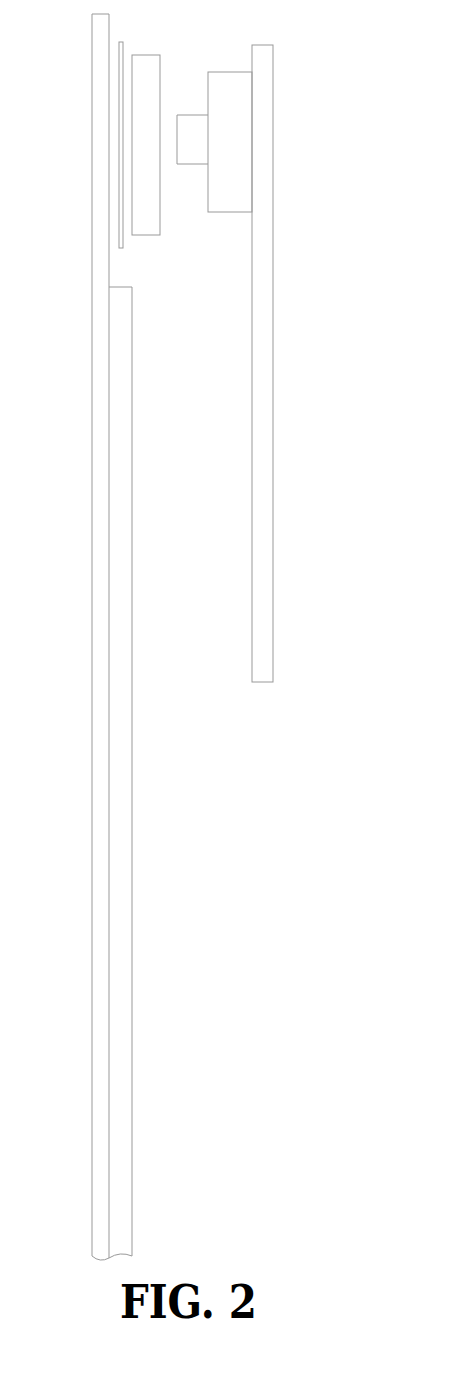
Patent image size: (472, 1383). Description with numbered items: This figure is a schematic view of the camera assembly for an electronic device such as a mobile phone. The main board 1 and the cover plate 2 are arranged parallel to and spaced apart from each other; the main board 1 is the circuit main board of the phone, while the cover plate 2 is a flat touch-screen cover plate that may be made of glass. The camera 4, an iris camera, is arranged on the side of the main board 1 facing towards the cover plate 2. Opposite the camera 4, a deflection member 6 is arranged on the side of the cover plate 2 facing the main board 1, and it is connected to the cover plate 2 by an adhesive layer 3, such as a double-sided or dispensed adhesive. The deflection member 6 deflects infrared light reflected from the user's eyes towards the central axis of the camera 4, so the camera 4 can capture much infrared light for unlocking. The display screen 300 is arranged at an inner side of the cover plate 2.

The main board 1 is at (265, 590).
The cover plate 2 is at (102, 620).
The adhesive layer 3 is at (120, 121).
The camera 4 is at (223, 137).
The deflection member 6 is at (145, 82).
The display screen 300 is at (115, 978).